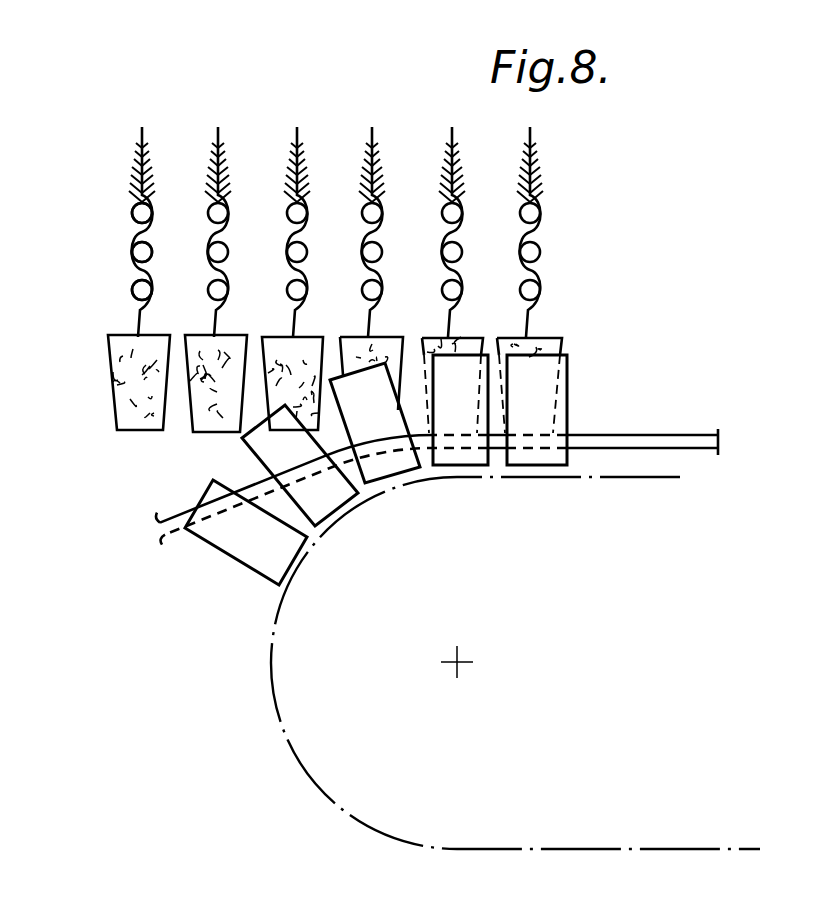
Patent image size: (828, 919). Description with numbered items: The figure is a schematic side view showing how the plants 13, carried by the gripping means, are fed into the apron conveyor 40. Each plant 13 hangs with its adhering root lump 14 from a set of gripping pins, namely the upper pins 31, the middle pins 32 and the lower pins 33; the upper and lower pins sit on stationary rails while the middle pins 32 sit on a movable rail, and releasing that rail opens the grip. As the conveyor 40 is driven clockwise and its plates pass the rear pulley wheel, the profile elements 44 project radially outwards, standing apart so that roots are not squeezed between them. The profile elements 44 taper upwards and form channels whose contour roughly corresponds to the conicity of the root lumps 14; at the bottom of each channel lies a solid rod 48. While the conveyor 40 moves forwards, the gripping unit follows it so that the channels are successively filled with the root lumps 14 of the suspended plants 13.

The plants 13 is at (220, 136).
The upper pins 31 is at (131, 215).
The middle pins 32 is at (140, 253).
The lower pins 33 is at (140, 290).
The root lumps 14 is at (118, 422).
The profile elements 44 is at (242, 547).
The solid rod 48 is at (635, 438).
The apron conveyor 40 is at (623, 477).